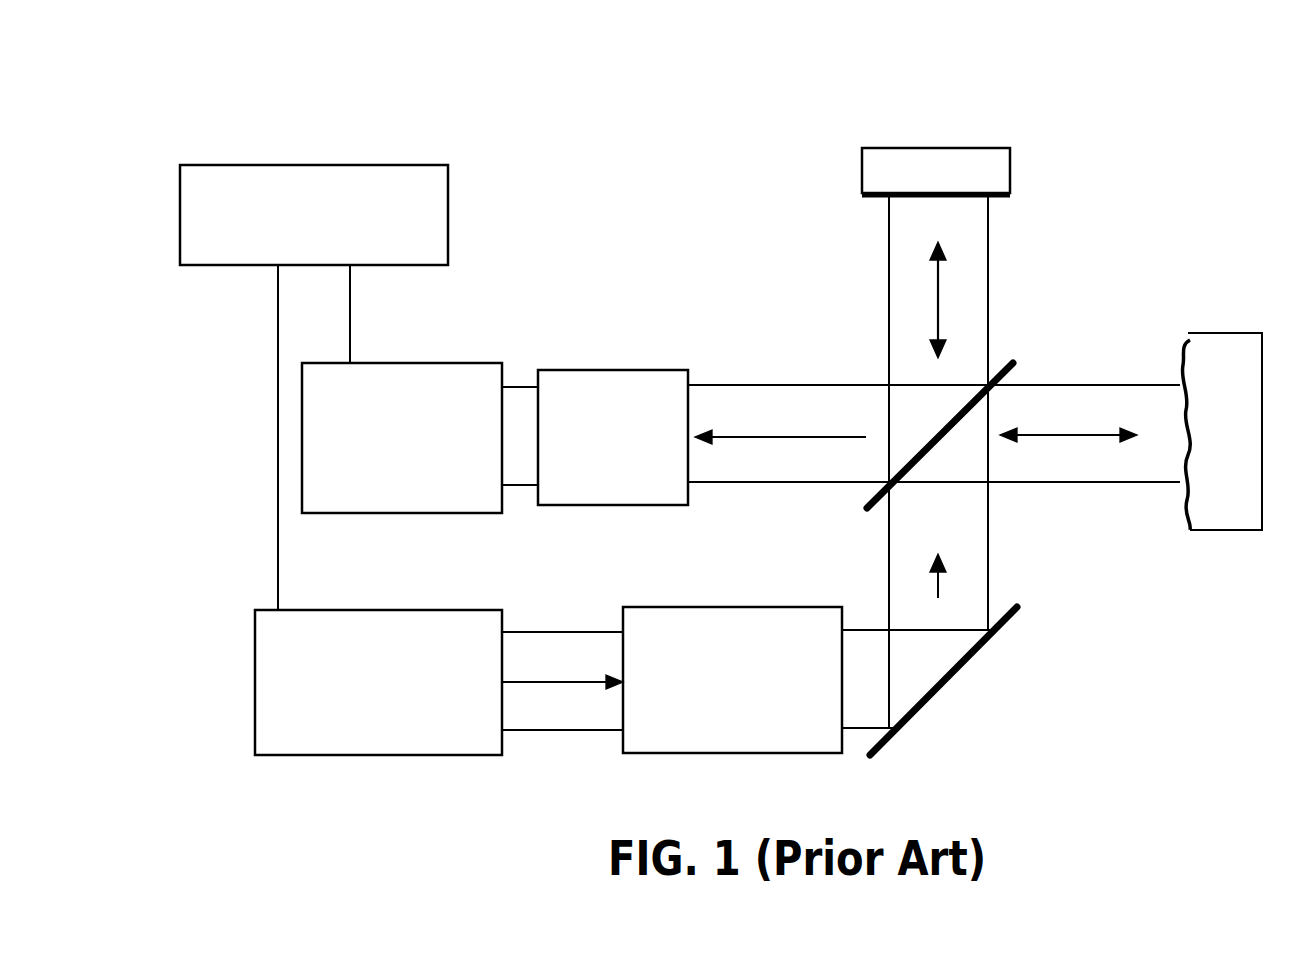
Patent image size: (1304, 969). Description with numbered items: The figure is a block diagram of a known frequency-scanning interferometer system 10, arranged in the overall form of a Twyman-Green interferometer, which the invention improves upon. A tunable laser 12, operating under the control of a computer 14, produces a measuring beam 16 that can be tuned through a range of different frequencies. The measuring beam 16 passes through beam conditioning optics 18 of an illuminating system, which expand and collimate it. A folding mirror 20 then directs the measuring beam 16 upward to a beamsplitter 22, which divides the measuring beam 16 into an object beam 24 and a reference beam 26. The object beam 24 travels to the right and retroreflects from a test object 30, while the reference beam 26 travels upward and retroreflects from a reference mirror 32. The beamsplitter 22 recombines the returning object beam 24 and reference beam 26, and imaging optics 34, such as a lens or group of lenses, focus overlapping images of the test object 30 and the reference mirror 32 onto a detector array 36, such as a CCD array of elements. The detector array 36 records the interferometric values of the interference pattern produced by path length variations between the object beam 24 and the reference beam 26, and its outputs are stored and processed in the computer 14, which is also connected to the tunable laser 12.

The frequency-scanning interferometer system 10 is at (404, 111).
The tunable laser 12 is at (355, 699).
The computer 14 is at (298, 232).
The measuring beam 16 is at (541, 682).
The beam conditioning optics 18 is at (701, 699).
The folding mirror 20 is at (928, 680).
The beamsplitter 22 is at (1000, 355).
The object beam 24 is at (805, 437).
The reference beam 26 is at (938, 313).
The test object 30 is at (1180, 368).
The reference mirror 32 is at (977, 197).
The imaging optics 34 is at (591, 452).
The detector array 36 is at (383, 462).